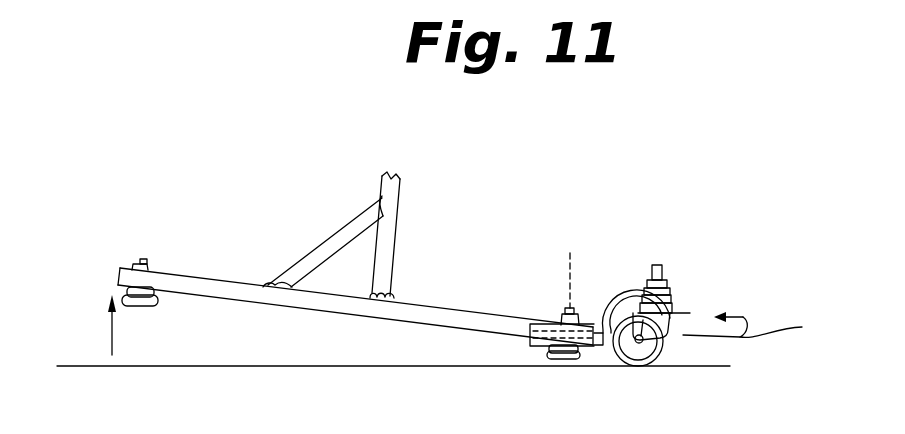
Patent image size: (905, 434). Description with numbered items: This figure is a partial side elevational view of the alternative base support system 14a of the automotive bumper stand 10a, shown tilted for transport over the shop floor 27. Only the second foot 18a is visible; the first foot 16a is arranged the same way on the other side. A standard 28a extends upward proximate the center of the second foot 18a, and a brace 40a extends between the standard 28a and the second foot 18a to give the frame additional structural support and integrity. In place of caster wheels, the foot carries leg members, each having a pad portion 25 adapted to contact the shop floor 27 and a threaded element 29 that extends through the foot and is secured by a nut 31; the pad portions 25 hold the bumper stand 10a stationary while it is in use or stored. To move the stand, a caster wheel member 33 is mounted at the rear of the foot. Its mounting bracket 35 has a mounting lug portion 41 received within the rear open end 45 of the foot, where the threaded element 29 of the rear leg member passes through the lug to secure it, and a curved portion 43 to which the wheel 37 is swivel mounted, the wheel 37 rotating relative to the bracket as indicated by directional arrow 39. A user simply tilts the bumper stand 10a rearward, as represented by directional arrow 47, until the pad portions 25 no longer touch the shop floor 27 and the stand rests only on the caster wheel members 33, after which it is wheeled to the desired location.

The automotive bumper stand 10a is at (517, 203).
The alternative base support system 14a is at (408, 212).
The first foot 16a is at (355, 291).
The second foot 18a is at (418, 305).
The pad portion 25 is at (158, 304).
The shop floor 27 is at (262, 366).
The standard 28a is at (385, 192).
The threaded element 29 is at (140, 263).
The nut 31 is at (146, 263).
The caster wheel member 33 is at (690, 280).
The mounting bracket 35 is at (639, 276).
The wheel 37 is at (645, 364).
The directional arrow 39 is at (760, 328).
The brace 40a is at (318, 248).
The mounting lug portion 41 is at (522, 340).
The curved portion 43 is at (608, 330).
The rear open end 45 is at (611, 270).
The directional arrow 47 is at (112, 333).